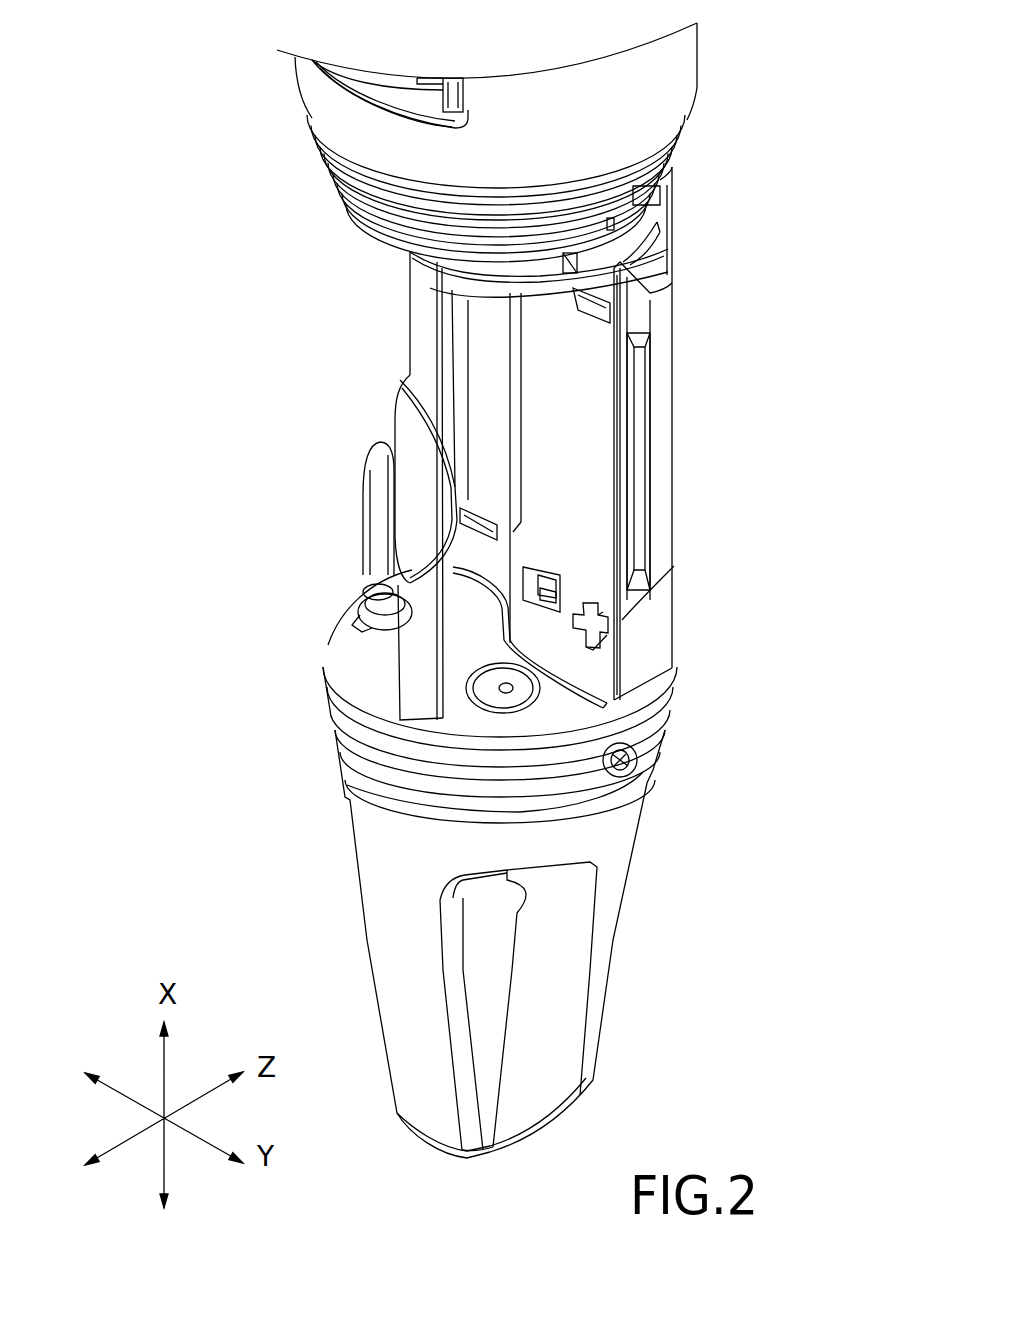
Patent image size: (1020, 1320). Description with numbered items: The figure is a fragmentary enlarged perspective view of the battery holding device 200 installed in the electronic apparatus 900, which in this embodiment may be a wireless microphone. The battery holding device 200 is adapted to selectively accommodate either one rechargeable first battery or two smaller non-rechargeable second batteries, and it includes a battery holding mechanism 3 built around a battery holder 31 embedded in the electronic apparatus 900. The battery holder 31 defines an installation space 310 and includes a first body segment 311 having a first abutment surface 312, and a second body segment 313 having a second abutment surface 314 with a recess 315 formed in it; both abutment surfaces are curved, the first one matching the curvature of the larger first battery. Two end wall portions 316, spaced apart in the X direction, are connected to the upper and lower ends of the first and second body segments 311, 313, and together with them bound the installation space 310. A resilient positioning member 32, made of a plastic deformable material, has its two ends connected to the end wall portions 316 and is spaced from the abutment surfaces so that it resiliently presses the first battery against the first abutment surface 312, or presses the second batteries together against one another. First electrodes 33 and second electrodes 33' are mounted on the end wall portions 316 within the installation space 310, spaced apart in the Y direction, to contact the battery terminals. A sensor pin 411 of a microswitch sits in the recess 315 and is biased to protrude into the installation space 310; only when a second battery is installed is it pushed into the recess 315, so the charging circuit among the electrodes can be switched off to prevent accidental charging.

The electronic apparatus 900 is at (670, 86).
The battery holding mechanism 3 is at (350, 708).
The battery holder 31 is at (378, 728).
The resilient positioning member 32 is at (418, 432).
The first electrodes 33 is at (333, 521).
The second electrodes 33' is at (603, 671).
The installation space 310 is at (352, 604).
The first body segment 311 is at (465, 320).
The first abutment surface 312 is at (473, 355).
The second body segment 313 is at (612, 372).
The second abutment surface 314 is at (588, 392).
The recess 315 is at (540, 568).
The end wall portions 316 is at (445, 275).
The sensor pin 411 is at (557, 582).
The battery holding device 200 is at (562, 752).